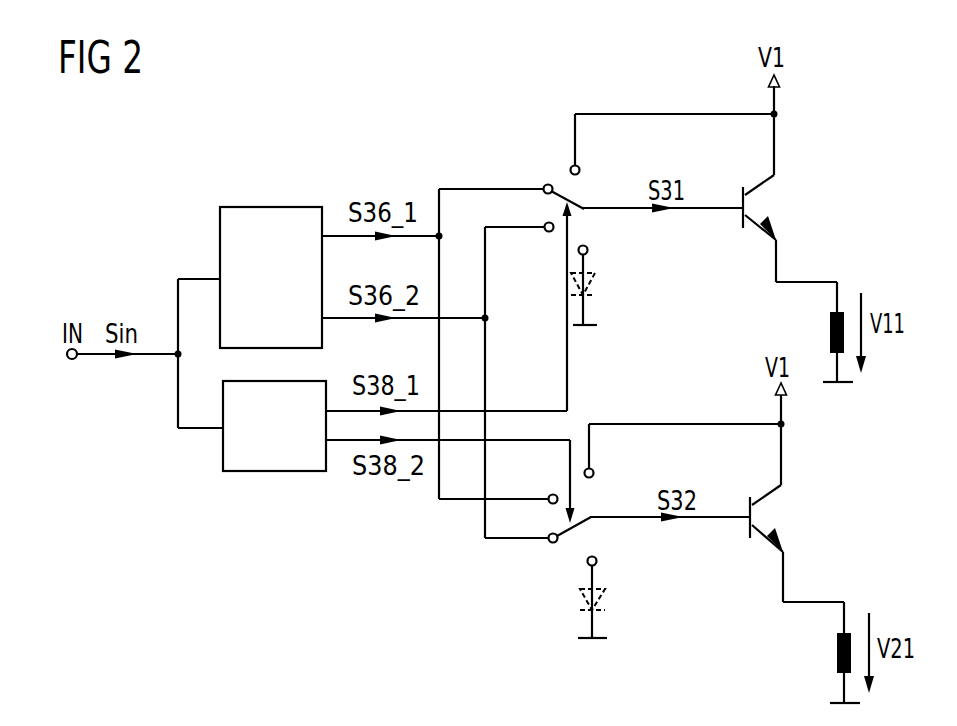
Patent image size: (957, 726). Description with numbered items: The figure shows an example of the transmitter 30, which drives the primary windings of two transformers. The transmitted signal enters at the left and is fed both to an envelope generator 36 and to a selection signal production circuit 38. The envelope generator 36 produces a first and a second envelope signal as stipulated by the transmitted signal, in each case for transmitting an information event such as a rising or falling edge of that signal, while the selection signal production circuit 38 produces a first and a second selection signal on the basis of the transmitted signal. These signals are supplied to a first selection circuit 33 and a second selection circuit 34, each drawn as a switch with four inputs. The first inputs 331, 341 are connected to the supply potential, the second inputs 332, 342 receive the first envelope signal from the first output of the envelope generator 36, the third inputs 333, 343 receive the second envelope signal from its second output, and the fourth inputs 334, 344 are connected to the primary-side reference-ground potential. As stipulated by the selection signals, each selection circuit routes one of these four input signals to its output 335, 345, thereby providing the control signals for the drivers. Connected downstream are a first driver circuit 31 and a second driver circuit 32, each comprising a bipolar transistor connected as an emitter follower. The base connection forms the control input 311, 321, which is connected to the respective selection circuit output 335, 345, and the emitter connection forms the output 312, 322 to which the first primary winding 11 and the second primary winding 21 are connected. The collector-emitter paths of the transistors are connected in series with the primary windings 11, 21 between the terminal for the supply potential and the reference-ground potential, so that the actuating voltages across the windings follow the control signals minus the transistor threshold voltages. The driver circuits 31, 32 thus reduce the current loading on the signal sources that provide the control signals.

The first primary winding 11 is at (828, 333).
The second primary winding 21 is at (835, 655).
The transmitter 30 is at (426, 163).
The first driver circuit 31 is at (772, 198).
The control input of first driver circuit 311 is at (741, 220).
The output of first driver circuit 312 is at (778, 262).
The second driver circuit 32 is at (779, 513).
The control input of second driver circuit 321 is at (747, 528).
The output of second driver circuit 322 is at (785, 577).
The first selection circuit 33 is at (575, 206).
The first input of first selection circuit 331 is at (579, 167).
The second input of first selection circuit 332 is at (545, 186).
The third input of first selection circuit 333 is at (548, 232).
The fourth input of first selection circuit 334 is at (588, 254).
The output of first selection circuit 335 is at (586, 212).
The second selection circuit 34 is at (582, 523).
The first input of second selection circuit 341 is at (595, 472).
The second input of second selection circuit 342 is at (551, 494).
The third input of second selection circuit 343 is at (551, 544).
The fourth input of second selection circuit 344 is at (597, 566).
The output of second selection circuit 345 is at (593, 520).
The envelope generator 36 is at (270, 207).
The selection signal production circuit 38 is at (275, 471).